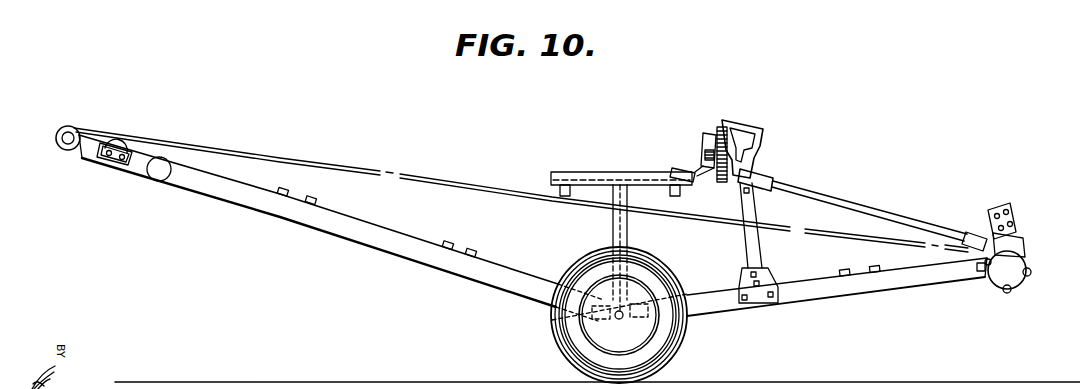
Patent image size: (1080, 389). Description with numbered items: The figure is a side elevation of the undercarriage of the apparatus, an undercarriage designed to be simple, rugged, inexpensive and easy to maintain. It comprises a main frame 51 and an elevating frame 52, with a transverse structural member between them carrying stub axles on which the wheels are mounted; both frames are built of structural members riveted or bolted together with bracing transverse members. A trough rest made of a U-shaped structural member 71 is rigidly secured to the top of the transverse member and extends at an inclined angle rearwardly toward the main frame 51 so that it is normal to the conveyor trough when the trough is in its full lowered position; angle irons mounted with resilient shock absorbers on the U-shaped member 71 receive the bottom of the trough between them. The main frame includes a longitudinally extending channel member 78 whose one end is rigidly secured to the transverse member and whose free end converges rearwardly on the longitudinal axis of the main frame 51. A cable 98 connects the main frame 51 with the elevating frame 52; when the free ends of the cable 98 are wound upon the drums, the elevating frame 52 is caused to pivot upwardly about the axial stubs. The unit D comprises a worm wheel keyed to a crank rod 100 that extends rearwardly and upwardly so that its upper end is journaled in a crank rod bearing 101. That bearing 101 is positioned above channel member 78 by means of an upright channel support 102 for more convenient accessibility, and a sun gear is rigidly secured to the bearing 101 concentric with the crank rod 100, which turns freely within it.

The main frame 51 is at (867, 299).
The elevating frame 52 is at (366, 254).
The U-shaped structural member 71 is at (626, 243).
The channel member 78 is at (830, 291).
The cable 98 is at (411, 178).
The crank rod 100 is at (923, 217).
The crank rod bearing 101 is at (769, 172).
The upright channel support 102 is at (762, 248).
The drive mechanism D is at (750, 123).